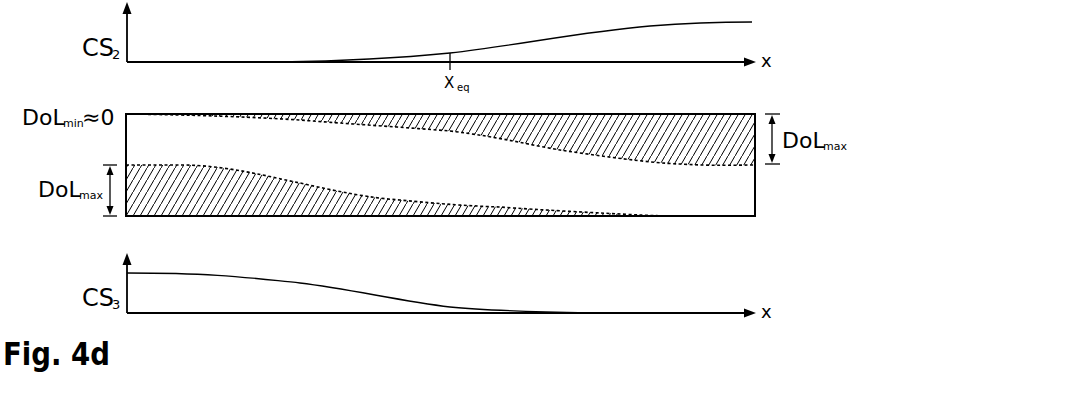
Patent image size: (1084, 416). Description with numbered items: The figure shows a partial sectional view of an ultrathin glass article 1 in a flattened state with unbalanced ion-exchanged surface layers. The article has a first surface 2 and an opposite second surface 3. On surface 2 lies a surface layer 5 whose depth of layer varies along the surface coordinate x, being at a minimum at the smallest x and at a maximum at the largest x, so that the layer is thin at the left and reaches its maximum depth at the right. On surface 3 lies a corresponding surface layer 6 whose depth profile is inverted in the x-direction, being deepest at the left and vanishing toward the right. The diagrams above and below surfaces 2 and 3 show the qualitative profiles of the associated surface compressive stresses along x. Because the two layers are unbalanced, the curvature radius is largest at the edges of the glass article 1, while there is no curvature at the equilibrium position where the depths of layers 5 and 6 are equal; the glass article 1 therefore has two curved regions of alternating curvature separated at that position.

The glass article 1 is at (167, 152).
The surface 2 is at (713, 100).
The surface 3 is at (707, 232).
The surface layer 5 is at (725, 140).
The surface layer 6 is at (147, 208).